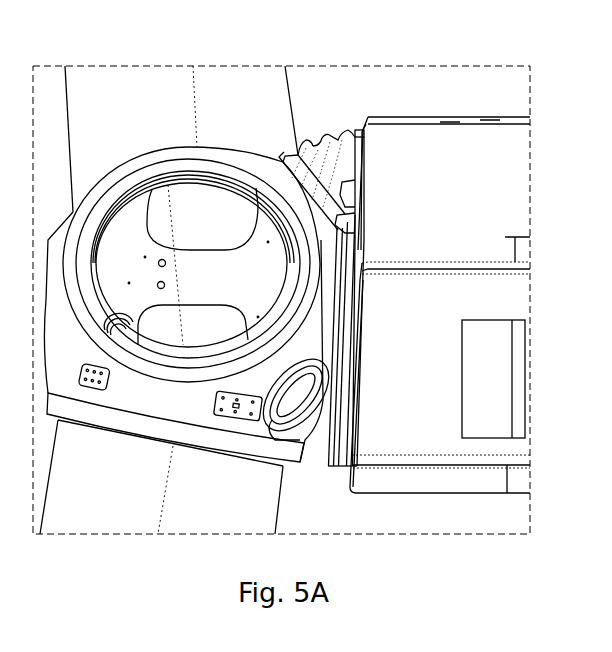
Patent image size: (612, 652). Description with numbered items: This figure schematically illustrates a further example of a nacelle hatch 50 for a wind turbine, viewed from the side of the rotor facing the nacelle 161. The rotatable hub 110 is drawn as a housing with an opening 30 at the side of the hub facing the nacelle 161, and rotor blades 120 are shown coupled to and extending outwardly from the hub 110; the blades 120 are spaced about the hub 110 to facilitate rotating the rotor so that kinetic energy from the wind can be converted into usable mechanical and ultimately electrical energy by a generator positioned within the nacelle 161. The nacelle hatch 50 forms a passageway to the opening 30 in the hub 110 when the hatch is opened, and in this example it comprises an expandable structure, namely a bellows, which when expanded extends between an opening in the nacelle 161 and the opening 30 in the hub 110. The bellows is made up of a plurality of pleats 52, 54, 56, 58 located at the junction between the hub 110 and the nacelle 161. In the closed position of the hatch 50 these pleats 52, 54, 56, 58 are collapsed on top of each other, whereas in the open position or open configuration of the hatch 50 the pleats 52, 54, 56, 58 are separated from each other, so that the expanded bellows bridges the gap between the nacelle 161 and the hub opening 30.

The rotor blade 120 is at (113, 72).
The rotatable hub 110 is at (52, 233).
The opening 30 is at (308, 420).
The nacelle hatch 50 is at (342, 80).
The pleat 52 is at (350, 123).
The pleat 54 is at (310, 137).
The pleat 56 is at (300, 143).
The pleat 58 is at (282, 160).
The nacelle 161 is at (435, 123).